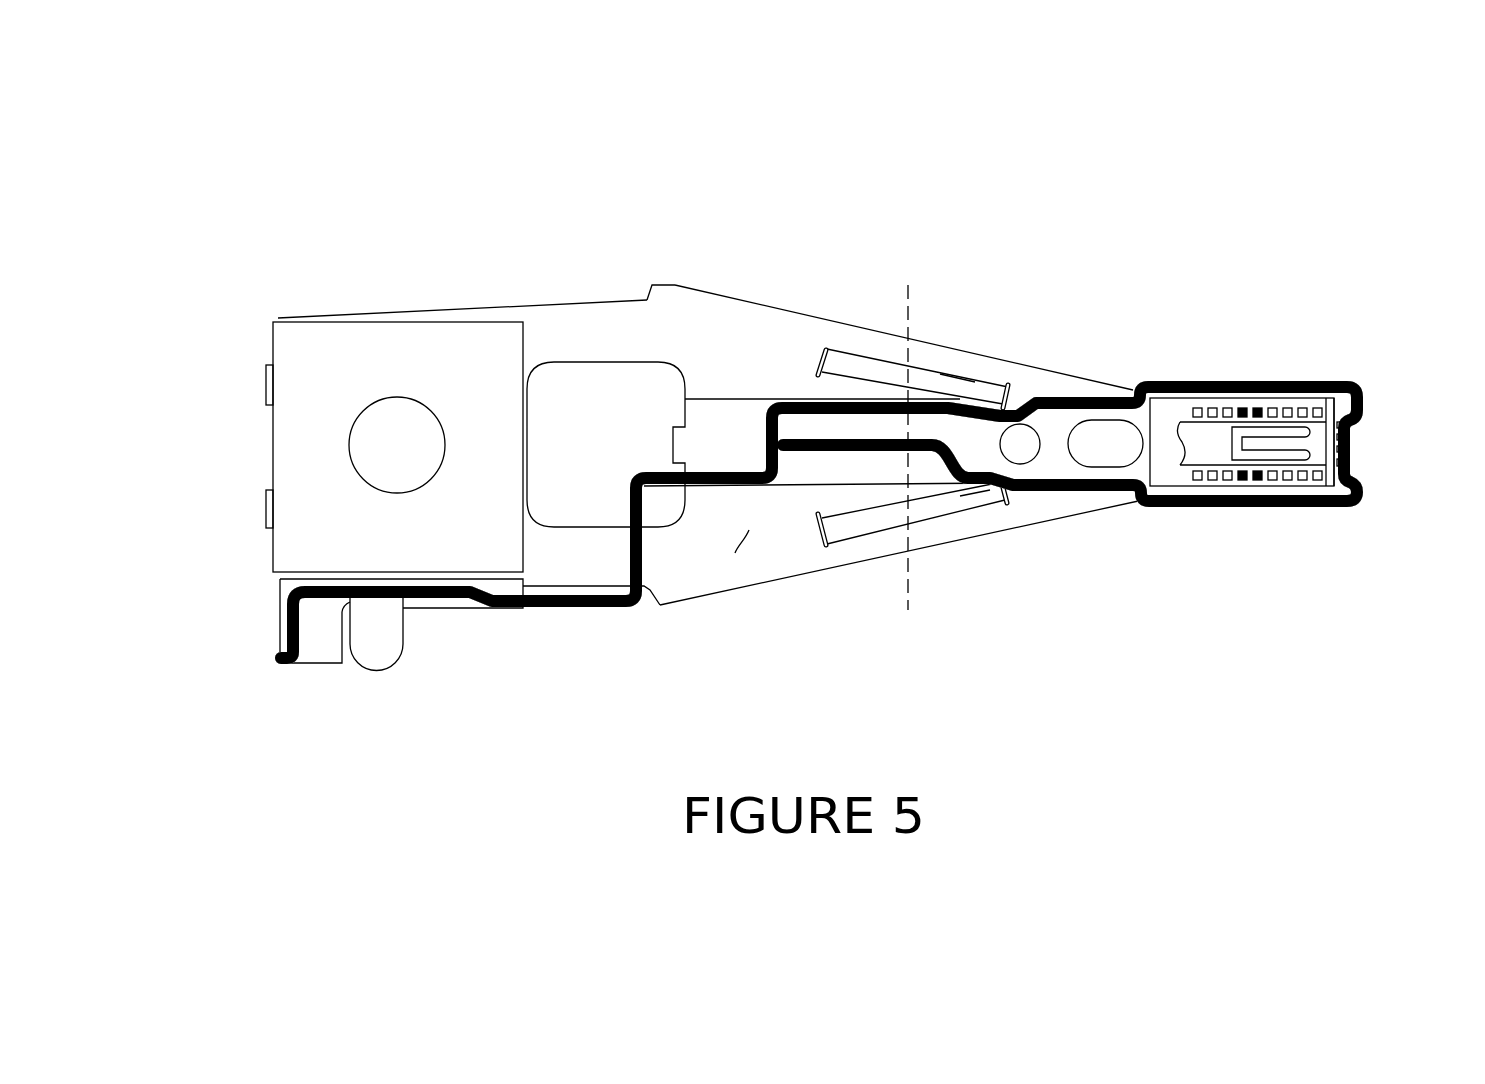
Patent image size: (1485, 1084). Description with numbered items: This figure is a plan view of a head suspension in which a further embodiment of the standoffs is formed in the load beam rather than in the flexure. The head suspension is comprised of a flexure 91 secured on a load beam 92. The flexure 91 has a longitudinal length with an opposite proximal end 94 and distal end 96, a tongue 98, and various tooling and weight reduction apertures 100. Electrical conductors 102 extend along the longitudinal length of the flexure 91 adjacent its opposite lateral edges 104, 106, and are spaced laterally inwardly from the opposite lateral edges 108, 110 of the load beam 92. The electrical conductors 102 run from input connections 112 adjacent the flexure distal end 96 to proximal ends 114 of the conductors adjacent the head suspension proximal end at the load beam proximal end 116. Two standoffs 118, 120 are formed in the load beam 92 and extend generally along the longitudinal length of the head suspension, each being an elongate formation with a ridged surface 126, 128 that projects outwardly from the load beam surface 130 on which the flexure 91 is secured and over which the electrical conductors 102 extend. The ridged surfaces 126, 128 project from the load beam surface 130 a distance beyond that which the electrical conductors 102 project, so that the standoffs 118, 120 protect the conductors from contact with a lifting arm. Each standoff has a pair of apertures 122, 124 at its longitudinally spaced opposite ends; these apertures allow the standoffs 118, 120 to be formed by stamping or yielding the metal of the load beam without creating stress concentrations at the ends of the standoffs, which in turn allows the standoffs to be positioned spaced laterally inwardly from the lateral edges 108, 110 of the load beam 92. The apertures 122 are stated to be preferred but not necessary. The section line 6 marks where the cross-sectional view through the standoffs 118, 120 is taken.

The section line 6- 6 is at (908, 285).
The flexure 91 is at (1158, 431).
The load beam 92 is at (668, 301).
The proximal end 94 is at (673, 438).
The distal end 96 is at (1363, 402).
The tongue 98 is at (1253, 443).
The tooling and weight reduction apertures 100 is at (1027, 438).
The electrical conductors 102 is at (648, 476).
The lateral edge 104 is at (720, 399).
The lateral edge 106 is at (727, 490).
The lateral edge 108 is at (870, 331).
The lateral edge 110 is at (867, 560).
The input connections 112 is at (1348, 425).
The proximal ends 114 is at (280, 661).
The load beam proximal end 116 is at (305, 318).
The standoff 118 is at (923, 385).
The standoff 120 is at (976, 502).
The apertures 122 is at (825, 349).
The apertures 124 is at (822, 548).
The ridged surface 126 is at (961, 384).
The ridged surface 128 is at (943, 507).
The load beam surface 130 is at (823, 533).